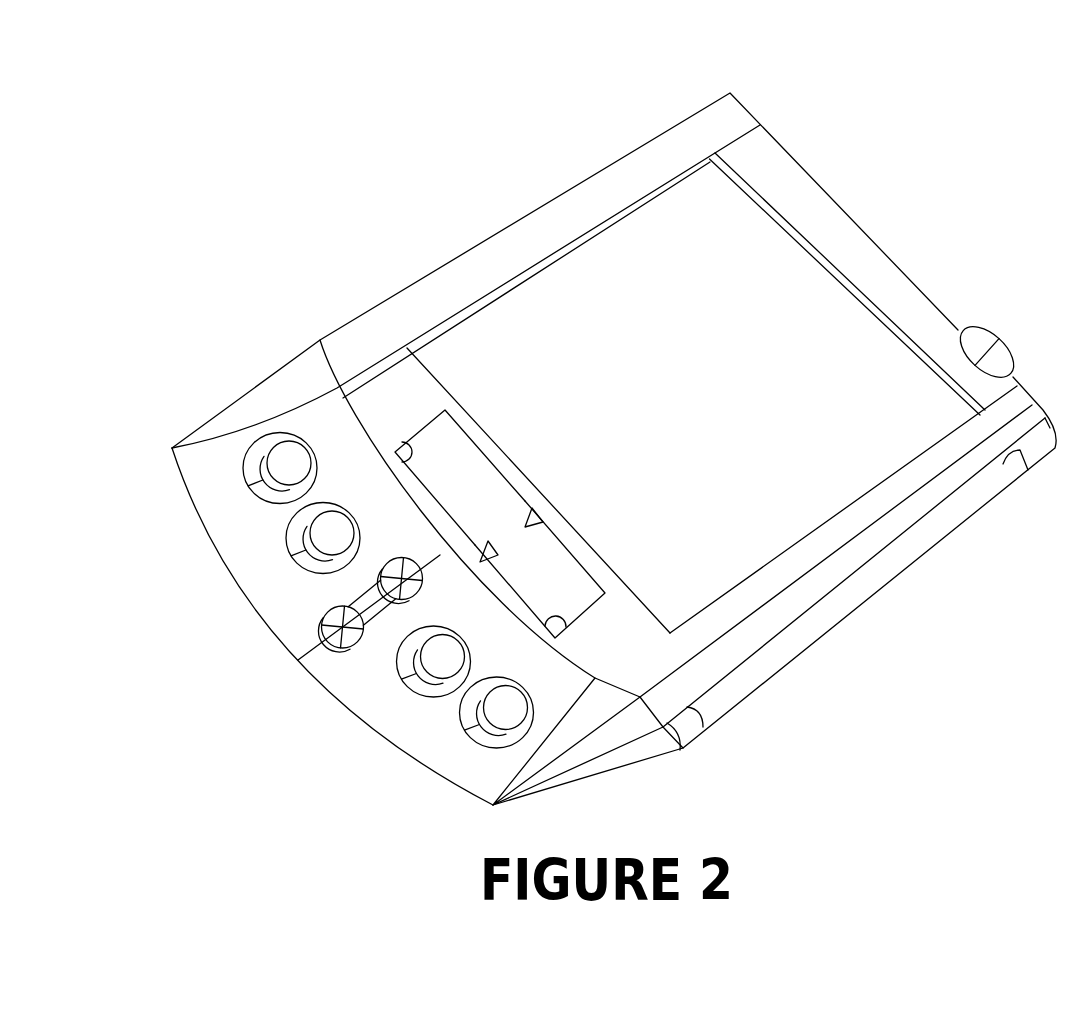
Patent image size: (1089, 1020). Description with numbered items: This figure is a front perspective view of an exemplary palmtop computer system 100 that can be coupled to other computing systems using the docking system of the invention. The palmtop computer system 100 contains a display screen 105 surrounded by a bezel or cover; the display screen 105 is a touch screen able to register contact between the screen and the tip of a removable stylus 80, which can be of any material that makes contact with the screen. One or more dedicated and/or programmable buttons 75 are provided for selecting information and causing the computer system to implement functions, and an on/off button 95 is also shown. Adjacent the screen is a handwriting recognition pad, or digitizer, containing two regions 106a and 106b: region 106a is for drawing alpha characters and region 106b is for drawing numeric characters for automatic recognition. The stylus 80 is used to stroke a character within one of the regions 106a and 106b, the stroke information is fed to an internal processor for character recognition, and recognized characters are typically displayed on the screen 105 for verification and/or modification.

The palmtop computer system 100 is at (190, 58).
The buttons 75 is at (298, 457).
The stylus 80 is at (838, 610).
The on/off button 95 is at (983, 327).
The display screen 105 is at (722, 260).
The region 106a is at (470, 468).
The region 106b is at (583, 601).